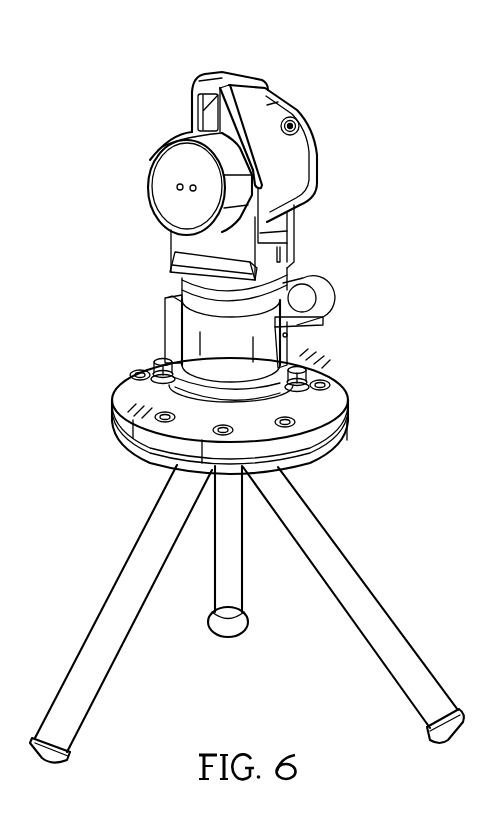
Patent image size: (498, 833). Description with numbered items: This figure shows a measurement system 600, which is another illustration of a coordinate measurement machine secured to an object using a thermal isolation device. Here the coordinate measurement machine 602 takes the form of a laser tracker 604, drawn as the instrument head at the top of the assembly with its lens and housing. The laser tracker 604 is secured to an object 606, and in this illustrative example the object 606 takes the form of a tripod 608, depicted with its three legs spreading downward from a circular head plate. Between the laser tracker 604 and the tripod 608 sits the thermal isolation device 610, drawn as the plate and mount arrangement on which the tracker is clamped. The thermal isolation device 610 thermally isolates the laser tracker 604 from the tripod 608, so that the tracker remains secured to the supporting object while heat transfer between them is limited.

The measurement system 600 is at (140, 95).
The coordinate measurement machine 602 is at (149, 237).
The laser tracker 604 is at (307, 170).
The object 606 is at (128, 516).
The tripod 608 is at (112, 597).
The thermal isolation device 610 is at (350, 398).